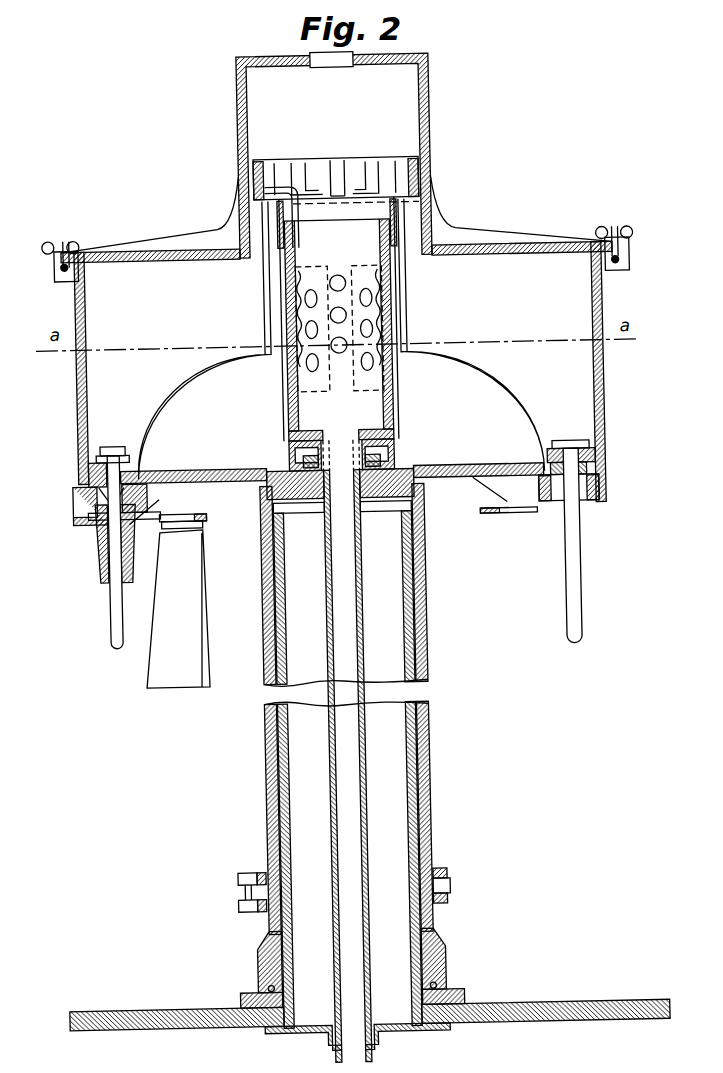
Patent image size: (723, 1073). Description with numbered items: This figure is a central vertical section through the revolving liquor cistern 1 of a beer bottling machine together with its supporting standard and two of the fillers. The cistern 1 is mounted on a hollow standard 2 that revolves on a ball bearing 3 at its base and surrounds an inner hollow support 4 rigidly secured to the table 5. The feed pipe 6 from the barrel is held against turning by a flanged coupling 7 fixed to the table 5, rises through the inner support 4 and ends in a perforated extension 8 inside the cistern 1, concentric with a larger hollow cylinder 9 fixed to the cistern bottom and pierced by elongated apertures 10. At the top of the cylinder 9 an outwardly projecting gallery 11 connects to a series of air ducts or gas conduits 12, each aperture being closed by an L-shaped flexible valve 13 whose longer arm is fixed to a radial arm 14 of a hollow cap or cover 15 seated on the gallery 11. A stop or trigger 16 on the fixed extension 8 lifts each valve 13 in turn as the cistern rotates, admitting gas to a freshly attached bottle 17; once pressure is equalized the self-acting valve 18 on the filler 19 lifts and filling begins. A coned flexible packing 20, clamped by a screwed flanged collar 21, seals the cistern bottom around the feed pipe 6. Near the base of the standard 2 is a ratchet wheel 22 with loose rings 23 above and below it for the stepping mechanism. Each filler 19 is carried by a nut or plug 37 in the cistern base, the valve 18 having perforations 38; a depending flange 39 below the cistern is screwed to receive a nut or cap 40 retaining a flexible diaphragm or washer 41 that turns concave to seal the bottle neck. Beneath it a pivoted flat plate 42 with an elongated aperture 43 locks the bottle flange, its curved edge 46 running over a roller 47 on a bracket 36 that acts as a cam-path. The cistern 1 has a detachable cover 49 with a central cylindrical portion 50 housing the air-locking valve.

The liquor tank or cistern 1 is at (91, 306).
The hollow standard 2 is at (426, 639).
The ball bearing 3 is at (260, 987).
The inner hollow support 4 is at (280, 571).
The table 5 is at (135, 1008).
The feed pipe 6 is at (331, 596).
The flanged coupling 7 is at (282, 1030).
The perforated extension 8 is at (386, 272).
The hollow cylinder 9 is at (286, 296).
The elongated apertures 10 is at (303, 275).
The gallery 11 is at (246, 205).
The air ducts or gas conduits 12 is at (411, 268).
The flexible valve 13 is at (318, 168).
The radial arm 14 is at (346, 160).
The hollow cap or cover 15 is at (262, 170).
The stop or trigger 16 is at (290, 186).
The bottle 17 is at (97, 570).
The self-acting valve 18 is at (114, 443).
The filler 19 is at (109, 606).
The flexible packing 20 is at (365, 468).
The screwed flanged collar 21 is at (300, 466).
The ratchet wheel 22 is at (231, 878).
The loose rings 23 is at (254, 874).
The standard or bracket 36 is at (203, 629).
The nut or plug 37 is at (90, 466).
The perforations 38 is at (128, 450).
The depending flange 39 is at (76, 491).
The nut or cap 40 is at (150, 497).
The flexible diaphragm or washer 41 is at (140, 478).
The flat plate 42 is at (100, 520).
The elongated aperture 43 is at (142, 516).
The curved edge 46 is at (205, 514).
The roller 47 is at (203, 521).
The cover 49 is at (150, 250).
The cylindrical portion 50 is at (248, 92).